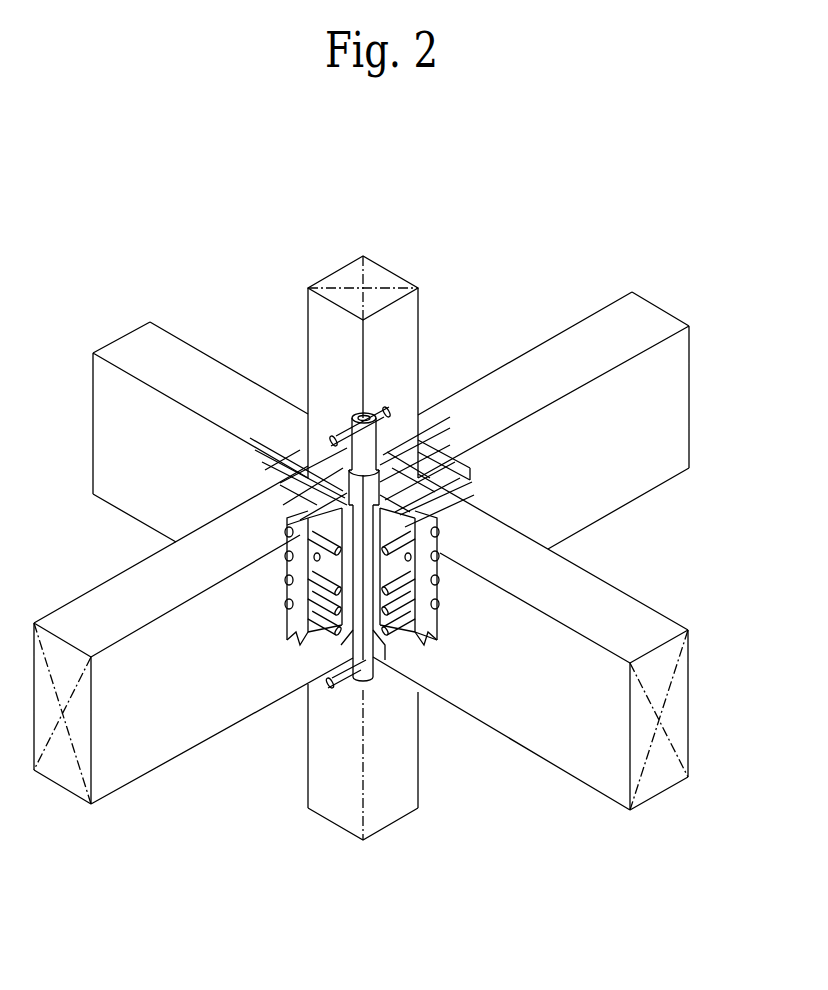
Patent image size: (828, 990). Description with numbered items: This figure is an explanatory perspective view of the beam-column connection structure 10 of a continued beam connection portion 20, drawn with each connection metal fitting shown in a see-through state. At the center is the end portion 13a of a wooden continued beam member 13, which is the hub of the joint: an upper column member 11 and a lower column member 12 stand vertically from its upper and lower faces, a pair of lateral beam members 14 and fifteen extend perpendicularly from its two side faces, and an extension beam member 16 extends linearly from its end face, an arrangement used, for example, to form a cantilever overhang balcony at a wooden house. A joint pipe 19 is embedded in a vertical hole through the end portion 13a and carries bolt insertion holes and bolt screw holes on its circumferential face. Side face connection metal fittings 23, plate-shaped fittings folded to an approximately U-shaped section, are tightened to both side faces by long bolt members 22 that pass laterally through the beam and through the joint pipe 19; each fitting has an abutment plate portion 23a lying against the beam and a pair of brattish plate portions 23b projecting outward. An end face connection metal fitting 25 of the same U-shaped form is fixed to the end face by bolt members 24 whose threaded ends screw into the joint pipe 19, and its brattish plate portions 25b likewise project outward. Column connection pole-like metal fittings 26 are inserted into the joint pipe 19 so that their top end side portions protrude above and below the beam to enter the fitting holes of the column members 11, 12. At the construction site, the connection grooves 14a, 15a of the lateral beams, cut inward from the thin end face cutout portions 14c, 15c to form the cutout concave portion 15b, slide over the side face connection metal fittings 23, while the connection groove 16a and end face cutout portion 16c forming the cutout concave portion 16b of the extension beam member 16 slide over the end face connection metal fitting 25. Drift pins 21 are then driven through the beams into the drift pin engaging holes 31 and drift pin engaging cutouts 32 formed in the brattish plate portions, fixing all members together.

The beam-column connection structure 10 is at (518, 278).
The column member 11 is at (402, 314).
The column member 12 is at (402, 782).
The continued beam member 13 is at (175, 347).
The end portion 13a is at (318, 468).
The lateral beam member 14 is at (597, 327).
The connection groove 14a is at (441, 450).
The end face cutout portion 14c is at (422, 422).
The connection groove 15a is at (308, 492).
The cutout concave portion 15b is at (208, 445).
The end face cutout portion 15c is at (308, 480).
The extension beam member 16 is at (645, 617).
The connection groove 16a is at (435, 520).
The cutout concave portion 16b is at (556, 478).
The end face cutout portion 16c is at (432, 505).
The joint pipe 19 is at (422, 440).
The continued beam connection portion 20 is at (265, 445).
The drift pin 21 is at (352, 478).
The long bolt member 22 is at (350, 470).
The side face connection metal fitting 23 is at (298, 548).
The abutment plate portion 23a is at (300, 492).
The brattish plate portion 23b is at (312, 632).
The bolt member 24 is at (380, 645).
The end face connection metal fitting 25 is at (440, 597).
The brattish plate portion 25b is at (422, 638).
The column connection pole-like metal fitting 26 is at (385, 425).
The drift pin engaging hole 31 is at (300, 563).
The drift pin engaging cutout 32 is at (298, 516).